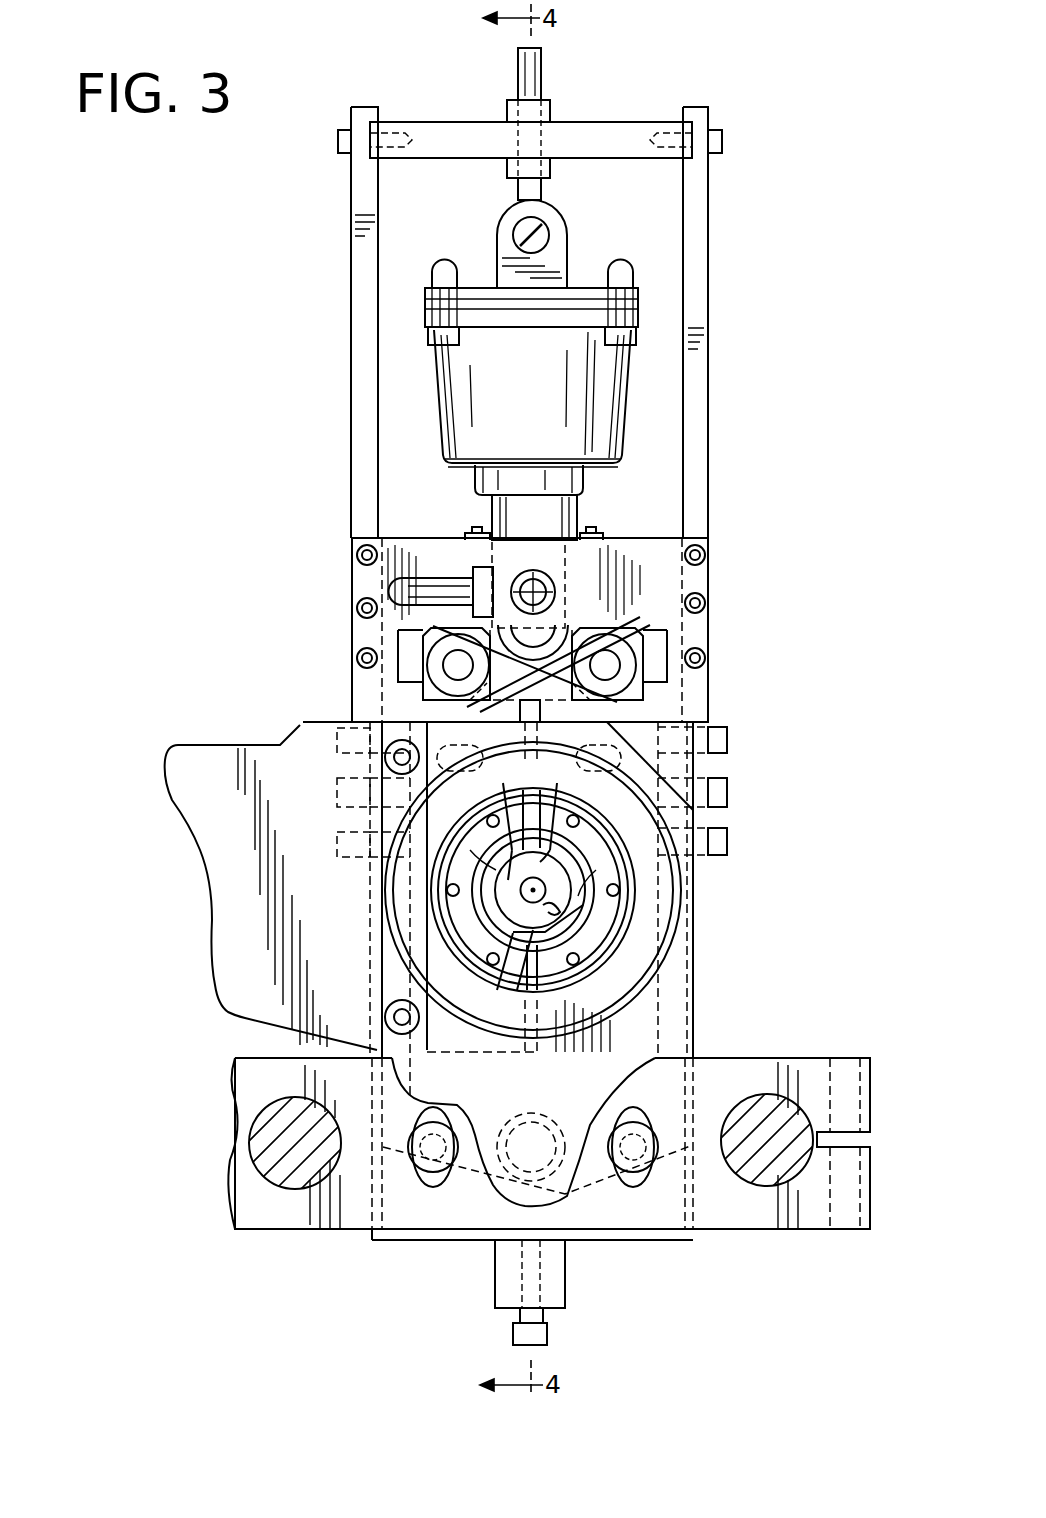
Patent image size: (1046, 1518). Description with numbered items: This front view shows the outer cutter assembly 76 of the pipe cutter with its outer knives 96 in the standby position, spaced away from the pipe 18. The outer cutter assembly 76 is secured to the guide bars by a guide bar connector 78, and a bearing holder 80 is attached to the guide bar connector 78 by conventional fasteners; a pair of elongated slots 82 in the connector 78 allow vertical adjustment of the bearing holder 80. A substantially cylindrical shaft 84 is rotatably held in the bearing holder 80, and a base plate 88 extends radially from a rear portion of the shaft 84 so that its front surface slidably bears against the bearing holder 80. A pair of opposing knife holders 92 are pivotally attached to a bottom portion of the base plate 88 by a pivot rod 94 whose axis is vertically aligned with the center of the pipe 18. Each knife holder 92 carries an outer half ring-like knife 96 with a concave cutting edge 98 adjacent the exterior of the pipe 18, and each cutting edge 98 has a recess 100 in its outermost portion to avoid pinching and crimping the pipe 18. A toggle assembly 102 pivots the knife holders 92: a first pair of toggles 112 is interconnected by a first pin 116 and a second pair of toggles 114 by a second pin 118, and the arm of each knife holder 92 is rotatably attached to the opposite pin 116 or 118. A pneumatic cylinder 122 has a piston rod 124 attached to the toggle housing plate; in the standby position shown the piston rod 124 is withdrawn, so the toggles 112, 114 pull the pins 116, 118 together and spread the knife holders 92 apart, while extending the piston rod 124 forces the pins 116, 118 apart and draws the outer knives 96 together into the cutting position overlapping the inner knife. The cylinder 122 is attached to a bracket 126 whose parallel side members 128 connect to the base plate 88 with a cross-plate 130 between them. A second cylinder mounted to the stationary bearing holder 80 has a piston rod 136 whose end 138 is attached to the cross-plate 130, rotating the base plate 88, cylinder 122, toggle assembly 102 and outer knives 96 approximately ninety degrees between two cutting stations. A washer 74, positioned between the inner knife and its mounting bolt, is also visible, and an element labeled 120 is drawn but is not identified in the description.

The pipe 18 is at (560, 912).
The washer 74 is at (510, 880).
The outer cutter assembly 76 is at (797, 369).
The guide bar connector 78 is at (770, 1058).
The bearing holder 80 is at (693, 970).
The elongated slots 82 is at (420, 1190).
The shaft 84 is at (612, 908).
The base plate 88 is at (693, 1043).
The knife holders 92 is at (402, 708).
The pivot rod 94 is at (574, 1197).
The outer knife 96 is at (492, 858).
The concave cutting edge 98 is at (487, 890).
The recess 100 is at (543, 863).
The toggle assembly 102 is at (655, 635).
The first pair of toggles 112 is at (465, 626).
The second pair of toggles 114 is at (600, 622).
The first pin 116 is at (458, 665).
The second pin 118 is at (606, 662).
The slide block 120 is at (423, 683).
The pneumatic cylinder 122 is at (626, 386).
The piston rod 124 is at (547, 540).
The bracket 126 is at (708, 193).
The parallel side members 128 is at (351, 389).
The cross-plate 130 is at (424, 532).
The piston rod 136 is at (428, 578).
The end 138 is at (505, 540).